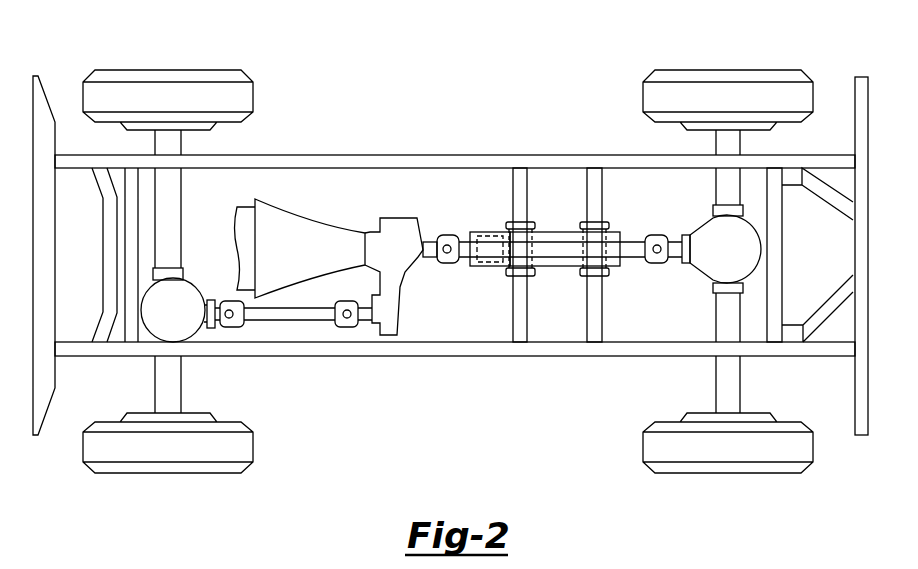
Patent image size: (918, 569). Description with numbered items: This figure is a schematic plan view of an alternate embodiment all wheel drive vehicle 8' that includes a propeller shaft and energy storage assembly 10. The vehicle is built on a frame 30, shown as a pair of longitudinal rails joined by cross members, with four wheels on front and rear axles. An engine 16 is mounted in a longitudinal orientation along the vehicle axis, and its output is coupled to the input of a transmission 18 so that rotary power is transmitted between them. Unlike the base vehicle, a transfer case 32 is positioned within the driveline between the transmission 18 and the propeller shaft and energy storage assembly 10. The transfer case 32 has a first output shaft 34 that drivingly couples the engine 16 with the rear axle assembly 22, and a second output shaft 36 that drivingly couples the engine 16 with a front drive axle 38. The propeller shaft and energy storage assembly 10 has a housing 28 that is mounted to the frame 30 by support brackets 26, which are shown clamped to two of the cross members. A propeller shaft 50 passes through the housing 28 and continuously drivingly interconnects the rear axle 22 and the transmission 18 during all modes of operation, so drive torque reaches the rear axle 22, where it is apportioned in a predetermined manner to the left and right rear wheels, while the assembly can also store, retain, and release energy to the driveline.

The all wheel drive vehicle 8' is at (558, 182).
The propeller shaft and energy storage assembly 10 is at (483, 226).
The engine 16 is at (240, 212).
The transmission 18 is at (278, 212).
The rear axle 22 is at (722, 328).
The support brackets 26 is at (592, 180).
The housing 28 is at (553, 268).
The frame 30 is at (436, 350).
The transfer case 32 is at (395, 220).
The first output shaft 34 is at (425, 257).
The second output shaft 36 is at (358, 334).
The front drive axle 38 is at (177, 322).
The propeller shaft 50 is at (631, 255).